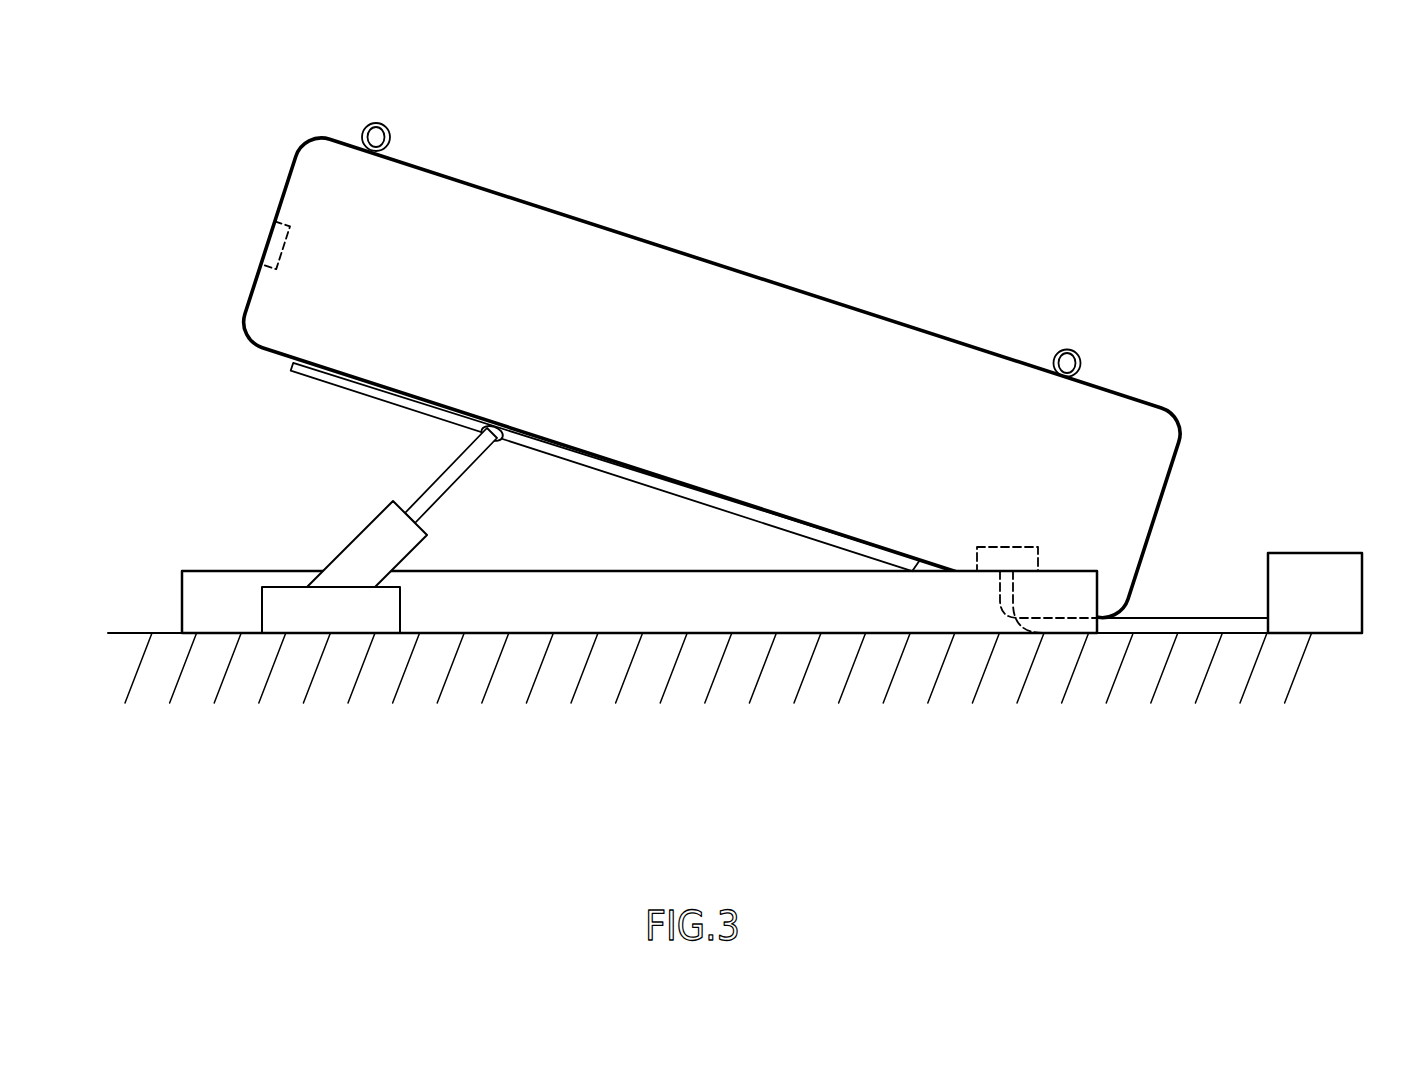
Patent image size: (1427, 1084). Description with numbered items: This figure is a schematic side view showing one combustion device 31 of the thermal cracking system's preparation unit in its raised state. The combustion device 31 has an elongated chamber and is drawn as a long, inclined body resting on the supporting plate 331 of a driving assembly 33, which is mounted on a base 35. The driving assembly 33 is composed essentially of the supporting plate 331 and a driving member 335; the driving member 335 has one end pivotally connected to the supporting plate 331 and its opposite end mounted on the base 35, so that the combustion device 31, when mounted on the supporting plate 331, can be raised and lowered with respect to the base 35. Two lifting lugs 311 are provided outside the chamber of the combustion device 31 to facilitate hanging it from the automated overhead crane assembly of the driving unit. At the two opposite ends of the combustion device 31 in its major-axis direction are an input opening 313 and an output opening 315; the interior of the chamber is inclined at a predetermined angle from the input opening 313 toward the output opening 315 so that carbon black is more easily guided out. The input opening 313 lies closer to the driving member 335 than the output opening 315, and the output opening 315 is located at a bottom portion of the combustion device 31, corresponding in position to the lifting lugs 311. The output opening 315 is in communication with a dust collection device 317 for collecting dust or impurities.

The combustion device 31 is at (605, 226).
The lifting lugs 311 is at (384, 123).
The input opening 313 is at (267, 241).
The output opening 315 is at (1018, 546).
The dust collection device 317 is at (1325, 553).
The driving assembly 33 is at (480, 463).
The supporting plate 331 is at (290, 363).
The driving member 335 is at (380, 513).
The base 35 is at (203, 570).